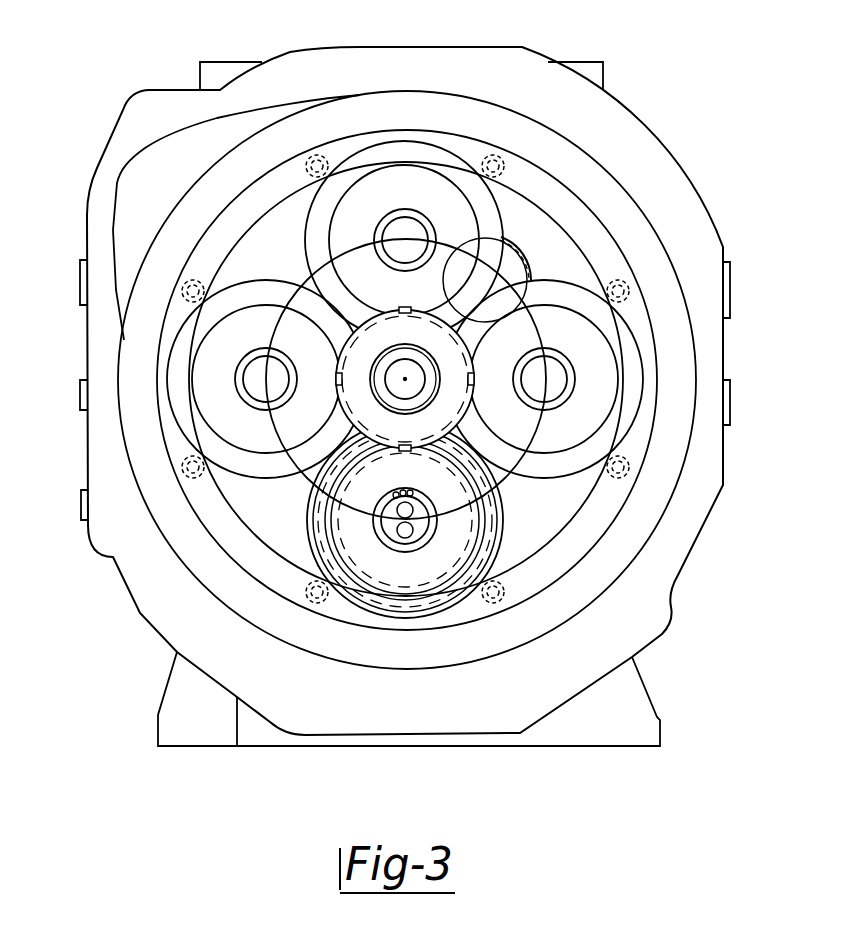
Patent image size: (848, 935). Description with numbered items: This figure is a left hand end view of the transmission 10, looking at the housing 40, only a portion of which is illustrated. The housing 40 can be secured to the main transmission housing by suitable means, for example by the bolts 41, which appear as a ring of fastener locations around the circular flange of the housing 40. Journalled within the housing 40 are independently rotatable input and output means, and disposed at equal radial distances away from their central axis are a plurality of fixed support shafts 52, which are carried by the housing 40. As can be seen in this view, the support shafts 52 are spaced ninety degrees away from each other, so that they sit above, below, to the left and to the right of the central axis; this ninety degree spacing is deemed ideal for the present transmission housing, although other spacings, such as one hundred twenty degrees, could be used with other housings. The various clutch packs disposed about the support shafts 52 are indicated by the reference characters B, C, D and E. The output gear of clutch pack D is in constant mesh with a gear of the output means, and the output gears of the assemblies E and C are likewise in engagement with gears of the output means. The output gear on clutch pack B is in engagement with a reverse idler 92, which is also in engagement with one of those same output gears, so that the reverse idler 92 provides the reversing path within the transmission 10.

The transmission 10 is at (653, 606).
The housing 40 is at (570, 205).
The bolts 41 is at (494, 156).
The fixed support shafts 52 is at (391, 224).
The reverse idler 92 is at (510, 250).
The clutch pack B is at (408, 176).
The clutch pack C is at (600, 398).
The clutch pack D is at (437, 565).
The clutch pack E is at (213, 389).